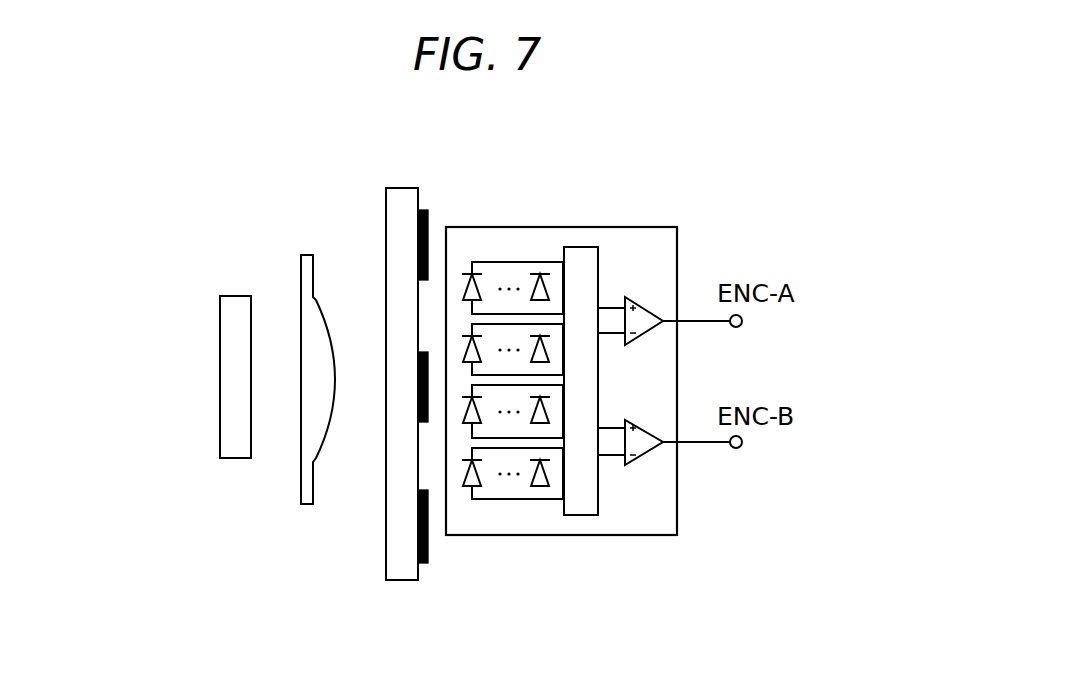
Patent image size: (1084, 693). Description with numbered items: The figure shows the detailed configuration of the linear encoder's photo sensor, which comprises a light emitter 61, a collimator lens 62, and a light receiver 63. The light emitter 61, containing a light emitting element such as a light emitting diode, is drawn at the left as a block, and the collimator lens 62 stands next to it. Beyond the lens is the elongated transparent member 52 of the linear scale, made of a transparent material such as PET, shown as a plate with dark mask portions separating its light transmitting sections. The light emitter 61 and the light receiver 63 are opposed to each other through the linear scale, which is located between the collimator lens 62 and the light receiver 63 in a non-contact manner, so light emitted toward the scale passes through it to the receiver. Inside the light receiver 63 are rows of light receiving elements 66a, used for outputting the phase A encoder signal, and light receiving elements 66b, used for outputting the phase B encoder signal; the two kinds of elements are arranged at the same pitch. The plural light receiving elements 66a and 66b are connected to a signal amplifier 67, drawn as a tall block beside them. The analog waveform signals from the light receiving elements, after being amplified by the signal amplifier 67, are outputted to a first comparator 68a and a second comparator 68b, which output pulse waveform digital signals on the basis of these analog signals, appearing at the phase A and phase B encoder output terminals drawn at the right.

The transparent member 52 is at (400, 197).
The light emitter 61 is at (231, 305).
The collimator lens 62 is at (306, 258).
The light receiver 63 is at (605, 553).
The light receiving elements 66a is at (478, 284).
The light receiving elements 66b is at (466, 420).
The signal amplifier 67 is at (582, 247).
The first comparator 68a is at (641, 316).
The second comparator 68b is at (641, 440).